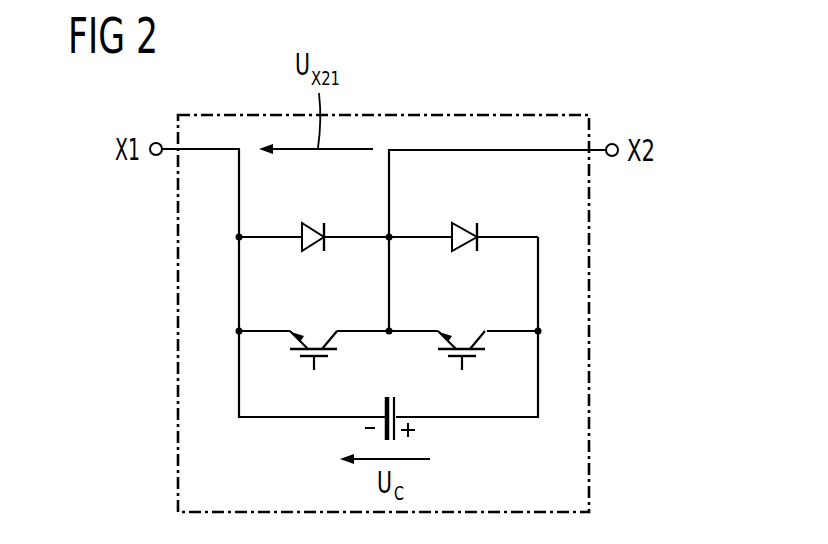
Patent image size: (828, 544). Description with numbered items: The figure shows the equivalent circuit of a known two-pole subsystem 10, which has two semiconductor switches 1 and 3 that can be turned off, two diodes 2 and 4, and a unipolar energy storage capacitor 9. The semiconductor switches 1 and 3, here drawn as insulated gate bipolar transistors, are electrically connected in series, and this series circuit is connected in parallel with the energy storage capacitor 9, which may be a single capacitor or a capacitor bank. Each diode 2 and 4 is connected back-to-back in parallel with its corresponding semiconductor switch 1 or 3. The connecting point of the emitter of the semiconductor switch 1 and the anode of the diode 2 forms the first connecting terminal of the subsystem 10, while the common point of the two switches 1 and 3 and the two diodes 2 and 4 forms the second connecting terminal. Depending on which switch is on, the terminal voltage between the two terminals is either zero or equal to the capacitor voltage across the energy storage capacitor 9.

The semiconductor switch which can be turned off 1 is at (313, 345).
The diode 2 is at (315, 222).
The semiconductor switch which can be turned off 3 is at (462, 345).
The diode 4 is at (468, 225).
The unipolar energy storage capacitor 9 is at (387, 393).
The two-pole subsystem 10 is at (588, 317).